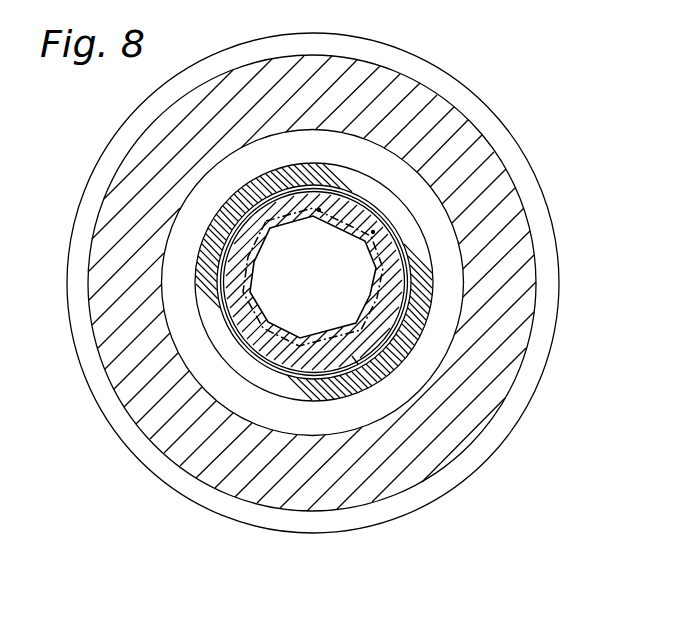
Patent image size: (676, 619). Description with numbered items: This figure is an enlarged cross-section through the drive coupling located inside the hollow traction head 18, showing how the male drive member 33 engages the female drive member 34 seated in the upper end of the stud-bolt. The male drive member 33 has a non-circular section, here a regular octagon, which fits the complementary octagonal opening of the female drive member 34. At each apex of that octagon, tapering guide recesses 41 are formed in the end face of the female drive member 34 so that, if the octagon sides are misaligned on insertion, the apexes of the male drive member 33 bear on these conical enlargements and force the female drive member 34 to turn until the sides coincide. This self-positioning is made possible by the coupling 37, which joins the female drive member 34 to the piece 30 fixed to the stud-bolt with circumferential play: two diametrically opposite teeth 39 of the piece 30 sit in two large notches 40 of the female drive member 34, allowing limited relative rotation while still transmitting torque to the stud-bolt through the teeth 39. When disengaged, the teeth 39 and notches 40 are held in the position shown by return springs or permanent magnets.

The hollow traction head 18 is at (535, 248).
The piece fixed to the upper part of the stud-bolt 30 is at (320, 390).
The male drive member 33 is at (330, 343).
The female drive member 34 is at (355, 360).
The coupling 37 is at (222, 305).
The teeth 39 is at (403, 283).
The notches 40 is at (222, 246).
The tapering guide recesses 41 is at (373, 232).